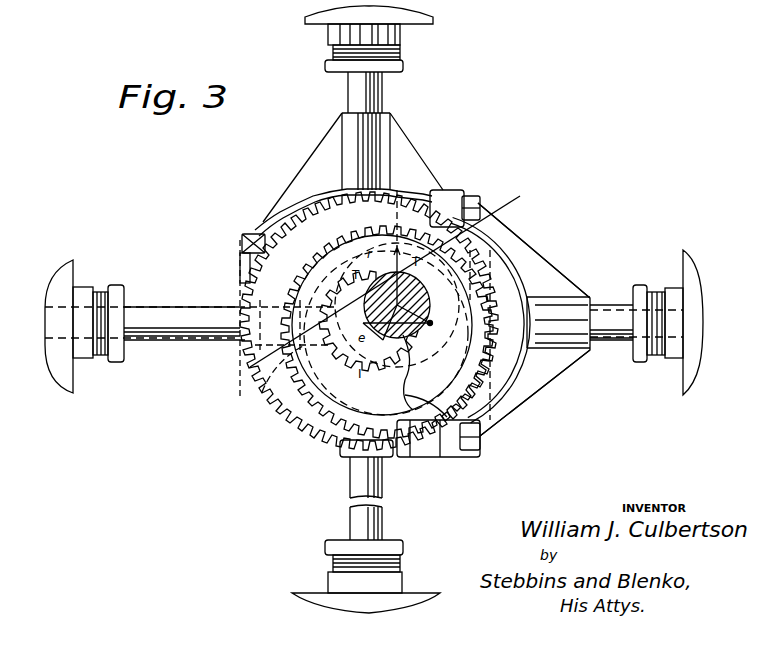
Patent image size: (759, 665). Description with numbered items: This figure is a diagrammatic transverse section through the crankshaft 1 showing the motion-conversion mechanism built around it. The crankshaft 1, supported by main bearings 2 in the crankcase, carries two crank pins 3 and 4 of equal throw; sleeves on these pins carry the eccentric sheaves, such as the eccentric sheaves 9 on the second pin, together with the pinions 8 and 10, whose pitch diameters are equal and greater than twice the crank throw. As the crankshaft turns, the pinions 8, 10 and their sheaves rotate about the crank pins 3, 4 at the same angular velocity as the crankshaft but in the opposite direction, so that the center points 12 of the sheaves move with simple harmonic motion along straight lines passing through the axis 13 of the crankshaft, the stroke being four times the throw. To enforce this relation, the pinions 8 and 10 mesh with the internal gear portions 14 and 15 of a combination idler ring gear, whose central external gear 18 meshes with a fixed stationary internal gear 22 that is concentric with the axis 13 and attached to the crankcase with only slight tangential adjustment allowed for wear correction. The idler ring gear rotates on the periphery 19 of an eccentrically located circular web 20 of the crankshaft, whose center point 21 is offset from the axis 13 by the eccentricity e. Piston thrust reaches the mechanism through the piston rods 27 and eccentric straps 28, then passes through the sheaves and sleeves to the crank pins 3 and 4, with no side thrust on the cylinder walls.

The crankshaft 1 is at (440, 310).
The main bearings 2 is at (245, 292).
The crank pin 3 is at (300, 370).
The crank pin 4 is at (430, 283).
The pinion 8 is at (248, 237).
The eccentric sheaves 9 is at (277, 222).
The pinion 10 is at (335, 262).
The center points of the eccentric sheaves 12 is at (433, 380).
The axis of the crankshaft 13 is at (369, 321).
The internal gear portion 14 is at (330, 275).
The internal gear portion 15 is at (319, 254).
The central external gear 18 is at (320, 240).
The periphery of the circular web 19 is at (417, 430).
The circular web 20 is at (467, 400).
The center point of the circular web 21 is at (440, 443).
The fixed stationary internal gear 22 is at (300, 423).
The piston rods 27 is at (372, 90).
The eccentric straps 28 is at (402, 158).